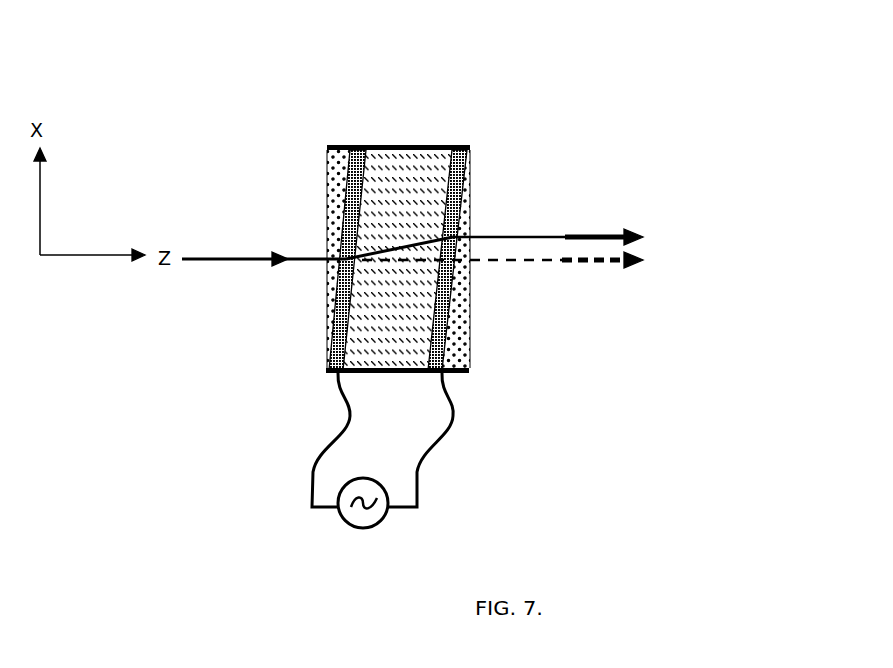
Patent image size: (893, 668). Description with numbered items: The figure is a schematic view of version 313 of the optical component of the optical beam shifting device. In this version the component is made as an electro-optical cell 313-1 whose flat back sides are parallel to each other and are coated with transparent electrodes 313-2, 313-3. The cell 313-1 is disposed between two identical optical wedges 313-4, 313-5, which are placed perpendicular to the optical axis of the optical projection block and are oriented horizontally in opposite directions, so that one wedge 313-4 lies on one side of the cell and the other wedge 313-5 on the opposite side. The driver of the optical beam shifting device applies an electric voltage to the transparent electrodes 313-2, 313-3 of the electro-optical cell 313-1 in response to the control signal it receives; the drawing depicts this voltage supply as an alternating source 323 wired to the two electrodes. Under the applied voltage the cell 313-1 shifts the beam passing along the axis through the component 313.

The optical component version 313 is at (588, 174).
The electro-optical cell 313-1 is at (410, 158).
The transparent electrode 313-2 is at (355, 148).
The transparent electrode 313-3 is at (468, 155).
The optical wedge 313-4 is at (335, 185).
The optical wedge 313-5 is at (467, 347).
The AC voltage source 323 is at (337, 523).